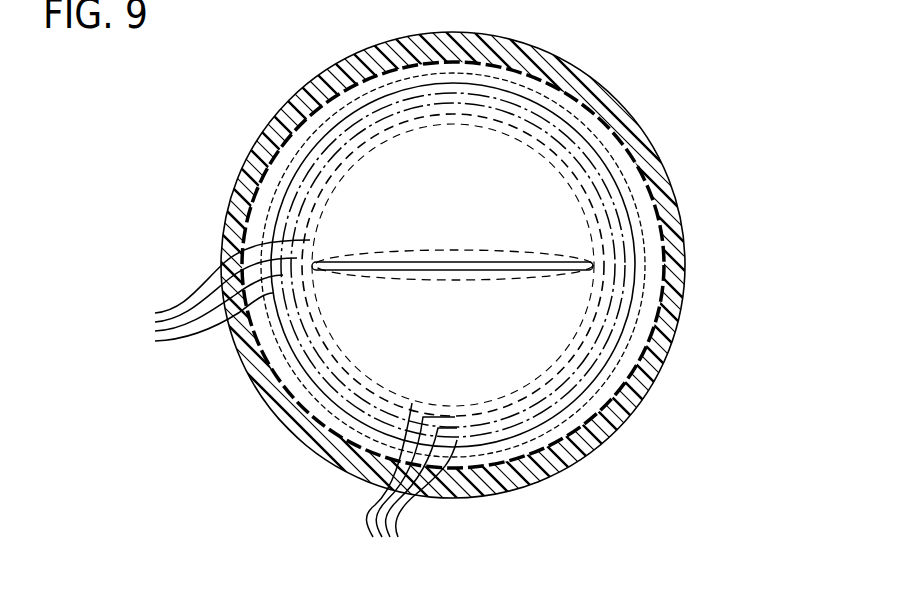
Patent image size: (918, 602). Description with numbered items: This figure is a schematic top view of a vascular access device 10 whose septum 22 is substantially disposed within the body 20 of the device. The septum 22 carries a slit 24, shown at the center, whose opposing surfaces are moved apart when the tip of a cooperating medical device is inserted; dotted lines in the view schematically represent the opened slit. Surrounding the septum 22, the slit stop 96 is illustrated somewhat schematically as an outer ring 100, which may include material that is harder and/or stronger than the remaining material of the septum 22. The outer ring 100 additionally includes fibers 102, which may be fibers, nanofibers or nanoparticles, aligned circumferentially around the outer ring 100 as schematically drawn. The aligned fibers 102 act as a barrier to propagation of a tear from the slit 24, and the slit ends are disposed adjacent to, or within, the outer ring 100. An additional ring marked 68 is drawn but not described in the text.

The vascular access device 10 is at (178, 107).
The body 20 is at (222, 201).
The septum 22 is at (510, 208).
The slit 24 is at (472, 263).
The inner dashed ring 68 is at (640, 169).
The slit stop 96 is at (217, 290).
The outer ring 100 is at (670, 333).
The fibers 102 is at (410, 486).